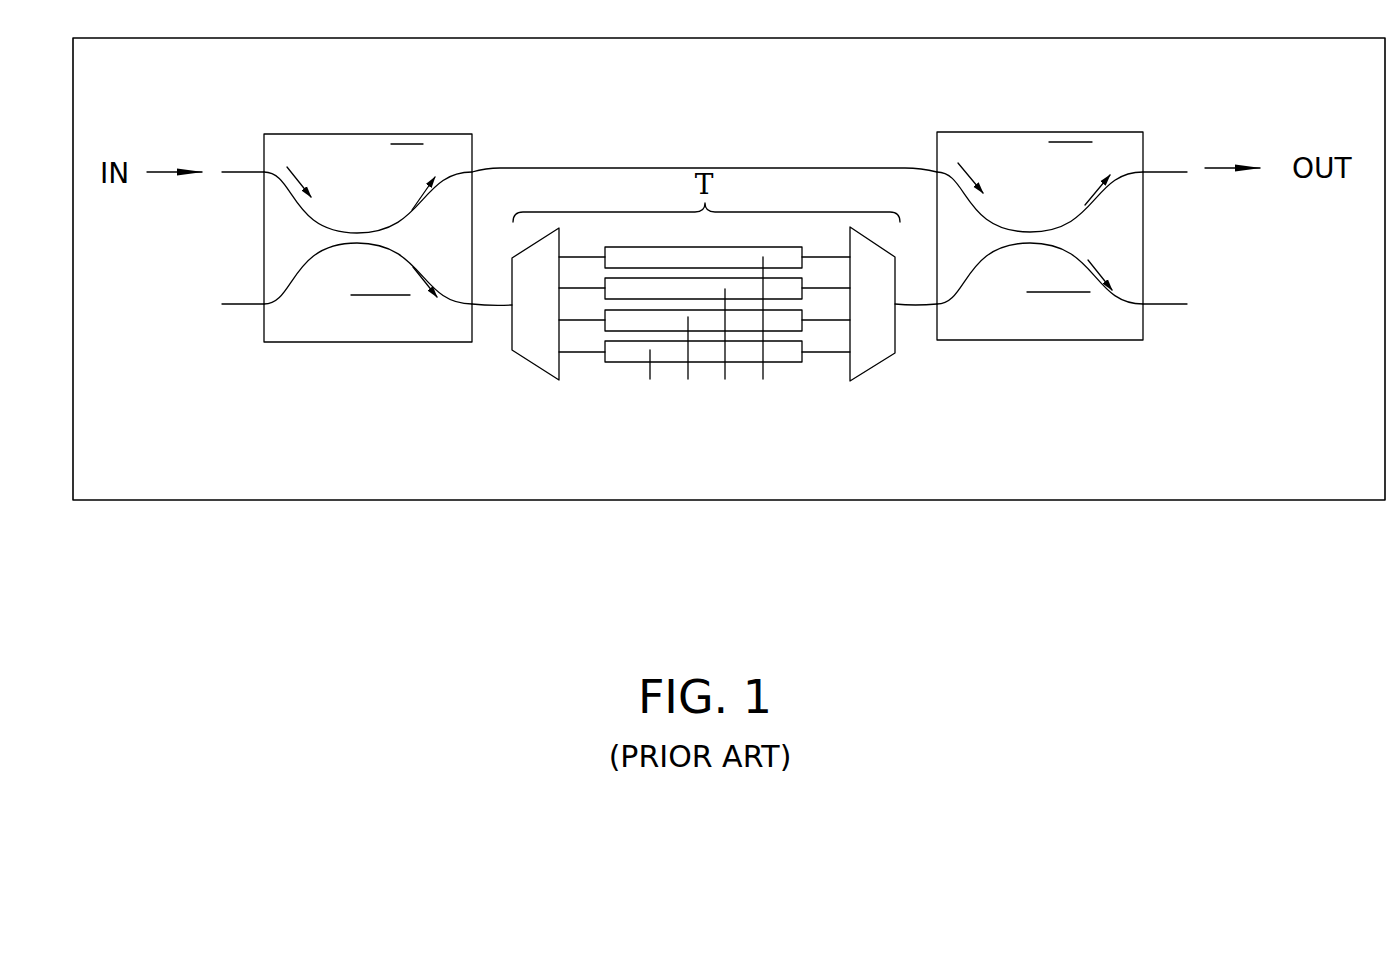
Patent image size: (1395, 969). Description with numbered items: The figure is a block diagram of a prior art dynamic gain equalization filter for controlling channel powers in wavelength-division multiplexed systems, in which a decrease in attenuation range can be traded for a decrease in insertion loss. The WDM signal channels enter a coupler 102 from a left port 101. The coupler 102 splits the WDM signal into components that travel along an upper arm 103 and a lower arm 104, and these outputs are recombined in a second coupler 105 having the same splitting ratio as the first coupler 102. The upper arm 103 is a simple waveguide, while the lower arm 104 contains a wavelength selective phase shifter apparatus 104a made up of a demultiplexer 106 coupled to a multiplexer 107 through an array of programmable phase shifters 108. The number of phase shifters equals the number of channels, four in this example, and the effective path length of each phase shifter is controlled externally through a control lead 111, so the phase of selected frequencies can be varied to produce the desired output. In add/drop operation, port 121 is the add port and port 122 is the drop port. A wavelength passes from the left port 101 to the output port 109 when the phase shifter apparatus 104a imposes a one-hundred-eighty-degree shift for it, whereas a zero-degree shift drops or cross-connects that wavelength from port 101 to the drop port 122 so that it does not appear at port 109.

The left port 101 is at (250, 170).
The coupler 102 is at (370, 134).
The upper arm 103 is at (647, 165).
The lower arm 104 is at (493, 303).
The wavelength selective phase shifter apparatus 104a is at (513, 527).
The second coupler 105 is at (1042, 132).
The demultiplexer 106 is at (520, 360).
The multiplexer 107 is at (873, 367).
The array of programmable phase shifters 108 is at (620, 362).
The port 109 is at (1163, 168).
The control lead 111 is at (632, 390).
The add port 121 is at (245, 307).
The drop port 122 is at (1167, 305).